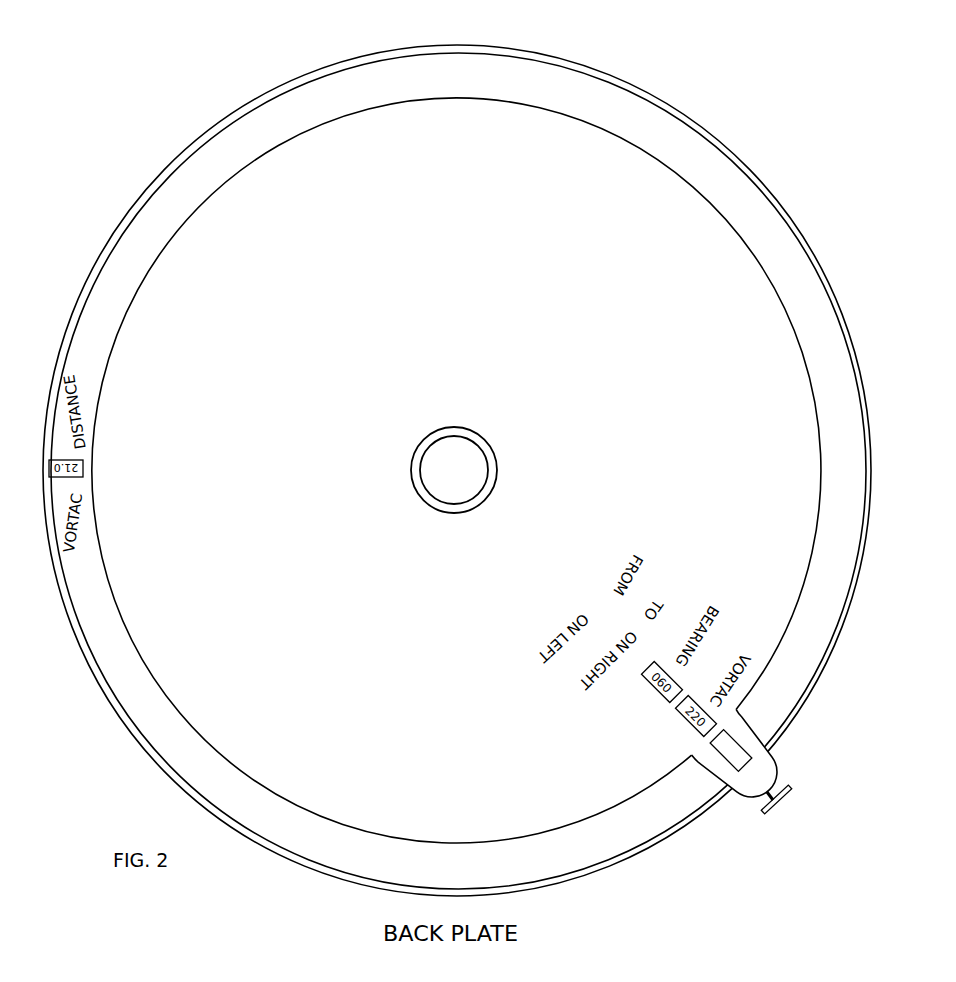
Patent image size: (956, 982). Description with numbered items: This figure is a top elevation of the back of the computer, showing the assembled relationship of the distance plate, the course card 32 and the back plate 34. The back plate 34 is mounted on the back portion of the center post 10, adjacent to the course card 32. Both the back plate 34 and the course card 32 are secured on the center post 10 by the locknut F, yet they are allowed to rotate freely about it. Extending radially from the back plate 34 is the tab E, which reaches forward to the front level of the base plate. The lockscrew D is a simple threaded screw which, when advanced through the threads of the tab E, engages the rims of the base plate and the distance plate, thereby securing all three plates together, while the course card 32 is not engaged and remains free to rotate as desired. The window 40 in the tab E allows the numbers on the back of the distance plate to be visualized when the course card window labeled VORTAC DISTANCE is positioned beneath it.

The center post 10 is at (473, 473).
The course card 32 is at (598, 852).
The back plate 34 is at (240, 752).
The window 40 is at (763, 752).
The locknut F is at (471, 430).
The lockscrew D is at (790, 788).
The tab E is at (750, 797).